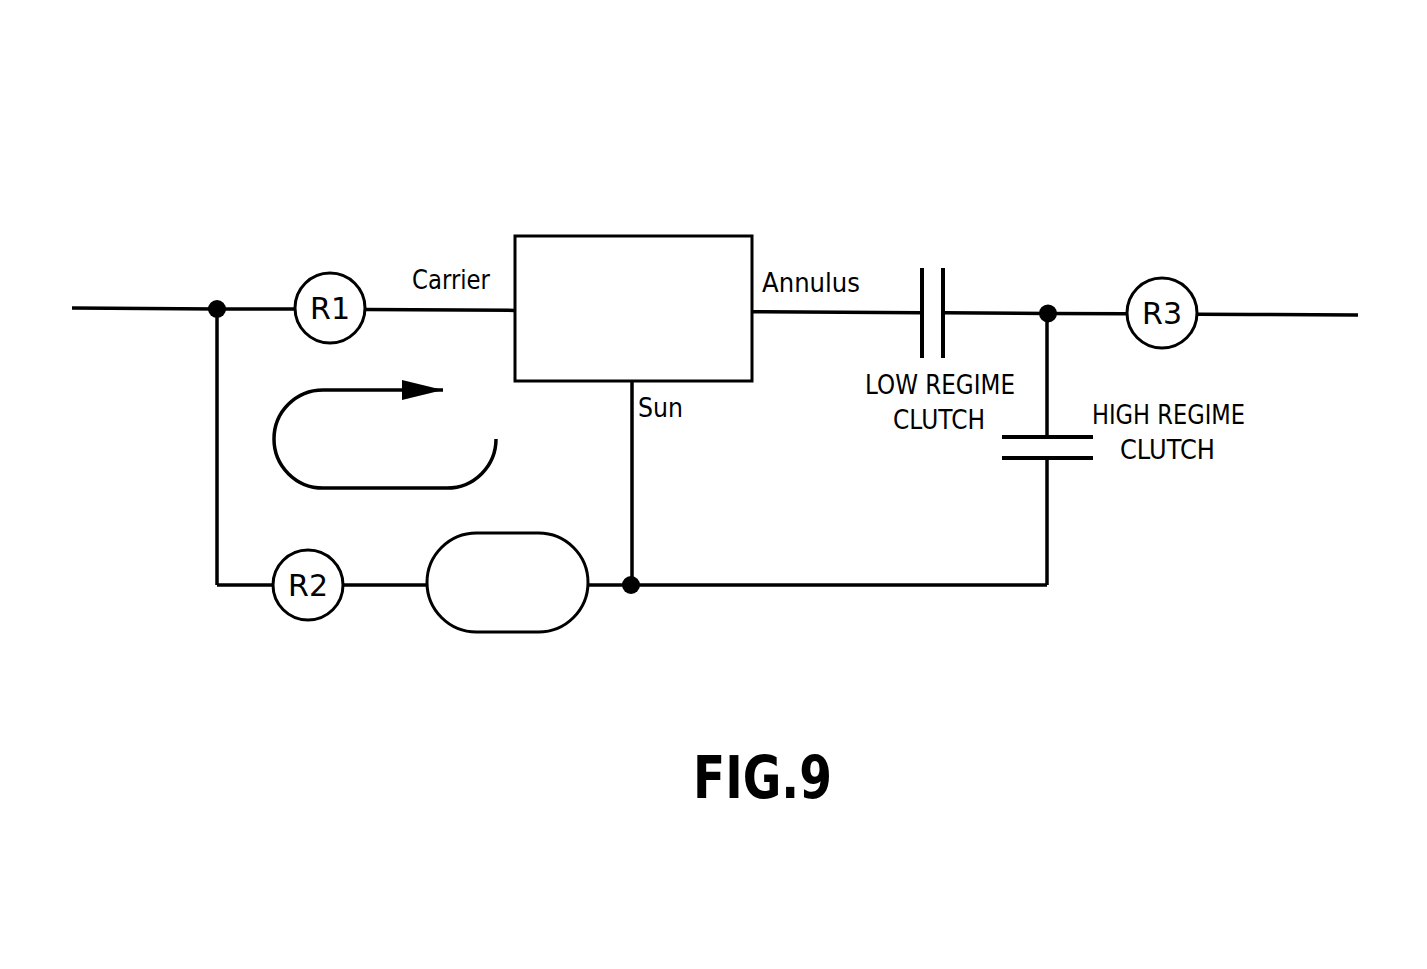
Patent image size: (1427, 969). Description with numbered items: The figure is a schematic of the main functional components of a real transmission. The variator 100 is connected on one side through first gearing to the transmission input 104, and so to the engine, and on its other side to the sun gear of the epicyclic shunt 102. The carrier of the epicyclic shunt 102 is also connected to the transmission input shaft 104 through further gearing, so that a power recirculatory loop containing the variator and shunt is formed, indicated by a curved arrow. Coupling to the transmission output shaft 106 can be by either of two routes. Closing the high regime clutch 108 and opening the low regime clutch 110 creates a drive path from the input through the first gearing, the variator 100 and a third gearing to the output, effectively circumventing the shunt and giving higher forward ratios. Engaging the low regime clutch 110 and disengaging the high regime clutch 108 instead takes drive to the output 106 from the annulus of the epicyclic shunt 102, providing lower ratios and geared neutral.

The variator 100 is at (513, 632).
The epicyclic shunt 102 is at (615, 236).
The transmission input shaft 104 is at (102, 308).
The transmission output shaft 106 is at (1250, 314).
The high regime clutch 108 is at (1073, 462).
The low regime clutch 110 is at (946, 298).